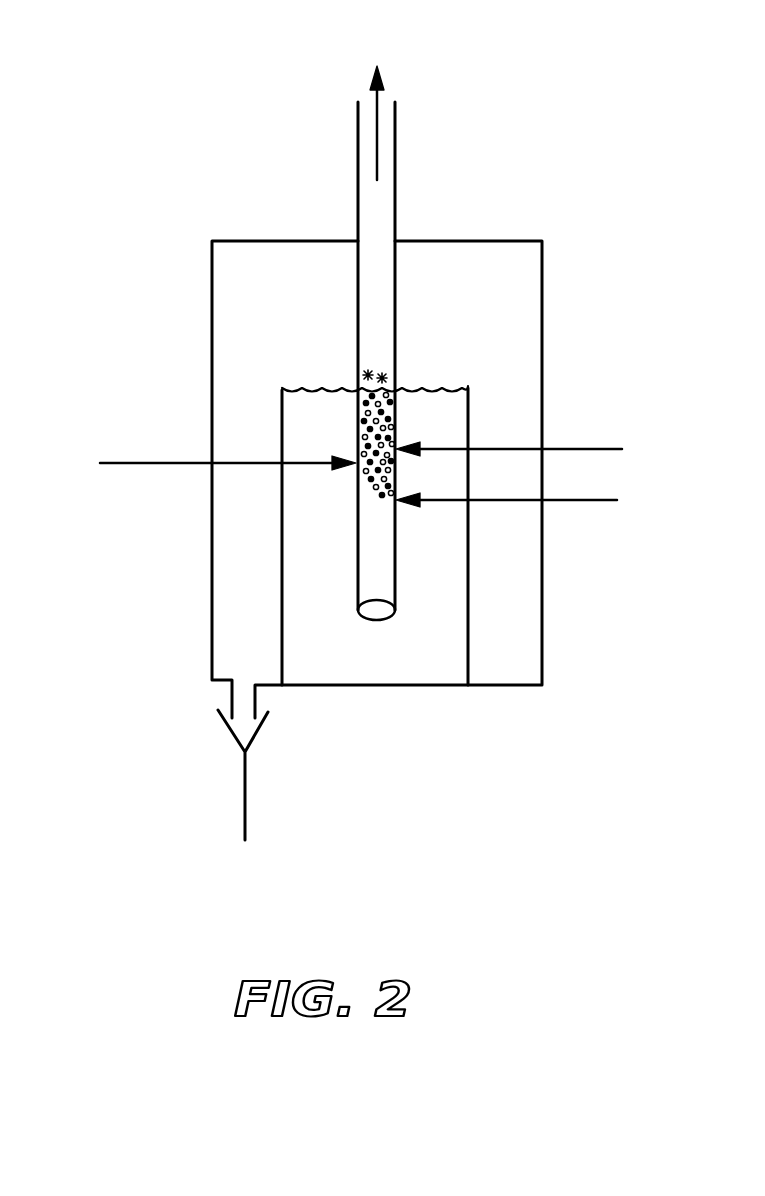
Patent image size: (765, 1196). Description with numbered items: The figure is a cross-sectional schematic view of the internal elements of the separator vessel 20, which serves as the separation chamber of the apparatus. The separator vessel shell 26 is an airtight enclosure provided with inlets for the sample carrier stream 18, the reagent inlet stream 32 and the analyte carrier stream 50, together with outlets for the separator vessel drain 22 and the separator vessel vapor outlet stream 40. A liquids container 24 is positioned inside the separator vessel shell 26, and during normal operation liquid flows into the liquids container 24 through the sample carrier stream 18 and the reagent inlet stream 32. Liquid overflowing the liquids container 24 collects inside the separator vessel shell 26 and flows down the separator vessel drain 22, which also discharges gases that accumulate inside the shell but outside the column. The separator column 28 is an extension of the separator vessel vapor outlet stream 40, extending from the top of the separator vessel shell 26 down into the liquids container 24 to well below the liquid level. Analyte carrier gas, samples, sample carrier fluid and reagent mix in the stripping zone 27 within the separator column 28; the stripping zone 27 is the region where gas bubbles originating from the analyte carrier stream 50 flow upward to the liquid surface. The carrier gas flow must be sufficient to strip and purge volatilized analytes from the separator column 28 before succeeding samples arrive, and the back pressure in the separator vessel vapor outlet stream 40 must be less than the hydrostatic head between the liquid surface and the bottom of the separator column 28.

The sample carrier stream 18 is at (163, 462).
The separator vessel 20 is at (188, 224).
The separator vessel drain 22 is at (232, 694).
The liquids container 24 is at (281, 440).
The separator vessel shell 26 is at (543, 298).
The stripping zone 27 is at (357, 432).
The separator column 28 is at (357, 335).
The reagent inlet stream 32 is at (573, 449).
The separator vessel vapor outlet stream 40 is at (374, 103).
The analyte carrier stream 50 is at (572, 504).